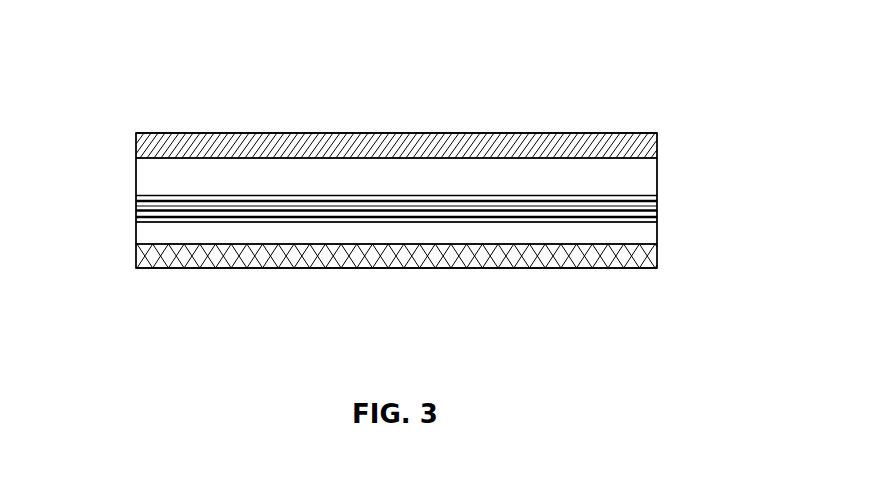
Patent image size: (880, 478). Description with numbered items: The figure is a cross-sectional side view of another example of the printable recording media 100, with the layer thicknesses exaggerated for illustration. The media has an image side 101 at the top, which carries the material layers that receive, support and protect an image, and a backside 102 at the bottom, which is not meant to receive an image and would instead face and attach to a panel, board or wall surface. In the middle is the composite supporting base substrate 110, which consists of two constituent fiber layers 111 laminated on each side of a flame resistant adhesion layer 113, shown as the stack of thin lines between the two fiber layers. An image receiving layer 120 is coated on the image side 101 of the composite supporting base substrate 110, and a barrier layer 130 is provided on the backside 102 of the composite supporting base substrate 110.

The printable recording media 100 is at (511, 101).
The image side 101 is at (312, 80).
The backside 102 is at (305, 350).
The composite supporting base substrate 110 is at (739, 187).
The constituent fiber layers 111 is at (657, 180).
The flame resistant adhesion layer 113 is at (137, 209).
The image receiving layer 120 is at (657, 143).
The barrier layer 130 is at (137, 257).